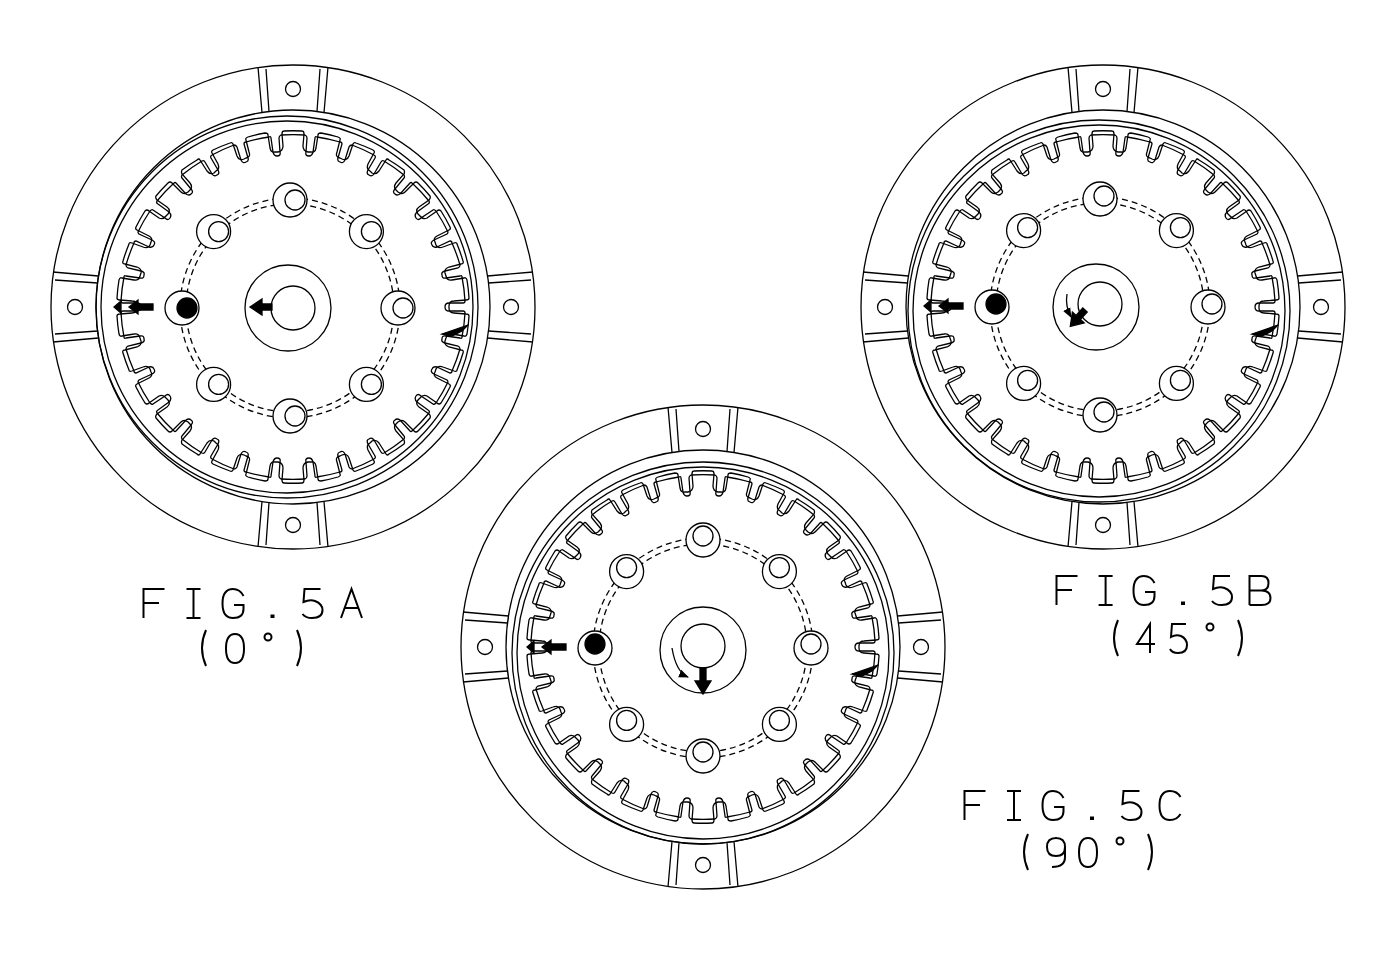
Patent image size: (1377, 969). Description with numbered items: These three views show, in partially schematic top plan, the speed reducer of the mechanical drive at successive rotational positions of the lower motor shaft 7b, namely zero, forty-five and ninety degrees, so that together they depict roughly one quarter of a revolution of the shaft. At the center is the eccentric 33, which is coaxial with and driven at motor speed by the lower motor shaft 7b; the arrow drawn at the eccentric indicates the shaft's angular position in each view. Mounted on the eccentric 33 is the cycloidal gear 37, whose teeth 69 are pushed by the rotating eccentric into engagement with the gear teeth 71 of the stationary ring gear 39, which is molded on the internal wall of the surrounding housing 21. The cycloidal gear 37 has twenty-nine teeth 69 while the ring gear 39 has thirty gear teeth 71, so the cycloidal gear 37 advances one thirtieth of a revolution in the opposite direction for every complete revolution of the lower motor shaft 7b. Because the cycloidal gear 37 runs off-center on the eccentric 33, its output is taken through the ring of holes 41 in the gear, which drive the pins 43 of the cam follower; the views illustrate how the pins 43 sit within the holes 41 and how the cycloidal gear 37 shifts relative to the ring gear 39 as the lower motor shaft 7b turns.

In FIG. 5A, the lower motor shaft 7b is at (253, 190).
In FIG. 5B, the lower motor shaft 7b is at (1060, 188).
In FIG. 5C, the lower motor shaft 7b is at (663, 529).
In FIG. 5A, the housing 21 is at (307, 307).
In FIG. 5B, the housing 21 is at (1117, 307).
In FIG. 5C, the housing 21 is at (717, 647).
In FIG. 5A, the eccentric 33 is at (340, 210).
In FIG. 5B, the eccentric 33 is at (1149, 210).
In FIG. 5C, the eccentric 33 is at (753, 552).
In FIG. 5A, the cycloidal gear 37 is at (314, 307).
In FIG. 5B, the cycloidal gear 37 is at (1125, 311).
In FIG. 5C, the cycloidal gear 37 is at (727, 653).
In FIG. 5A, the ring gear 39 is at (505, 349).
In FIG. 5B, the ring gear 39 is at (1314, 349).
In FIG. 5C, the ring gear 39 is at (915, 689).
In FIG. 5A, the holes 41 is at (285, 317).
In FIG. 5B, the holes 41 is at (1092, 316).
In FIG. 5C, the holes 41 is at (697, 657).
In FIG. 5A, the pins 43 is at (283, 309).
In FIG. 5B, the pins 43 is at (1089, 306).
In FIG. 5C, the pins 43 is at (694, 647).
In FIG. 5A, the teeth 69 is at (296, 324).
In FIG. 5B, the teeth 69 is at (1106, 324).
In FIG. 5C, the teeth 69 is at (706, 664).
In FIG. 5A, the gear teeth 71 is at (309, 324).
In FIG. 5B, the gear teeth 71 is at (1119, 324).
In FIG. 5C, the gear teeth 71 is at (719, 664).